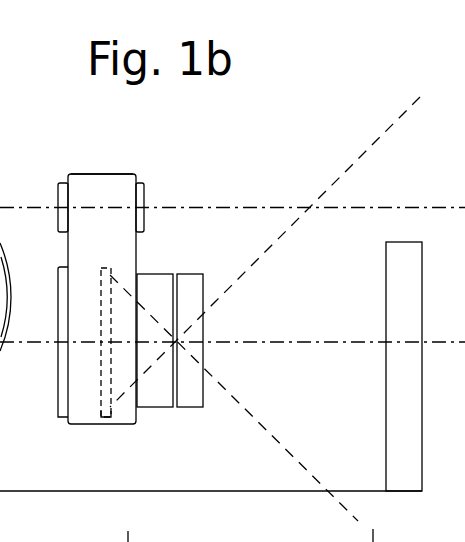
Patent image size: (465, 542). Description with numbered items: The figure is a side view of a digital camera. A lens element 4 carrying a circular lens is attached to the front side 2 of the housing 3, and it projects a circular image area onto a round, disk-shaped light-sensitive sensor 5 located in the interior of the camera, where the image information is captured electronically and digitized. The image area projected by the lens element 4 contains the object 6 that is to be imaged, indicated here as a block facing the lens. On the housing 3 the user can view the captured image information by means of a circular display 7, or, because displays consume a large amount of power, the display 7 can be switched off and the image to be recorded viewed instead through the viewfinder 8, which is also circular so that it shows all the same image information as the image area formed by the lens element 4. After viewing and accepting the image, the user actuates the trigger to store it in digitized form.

The front side 2 is at (137, 257).
The housing 3 is at (92, 174).
The lens element 4 is at (187, 400).
The sensor 5 is at (108, 417).
The object 6 is at (387, 275).
The display 7 is at (58, 375).
The viewfinder 8 is at (145, 200).